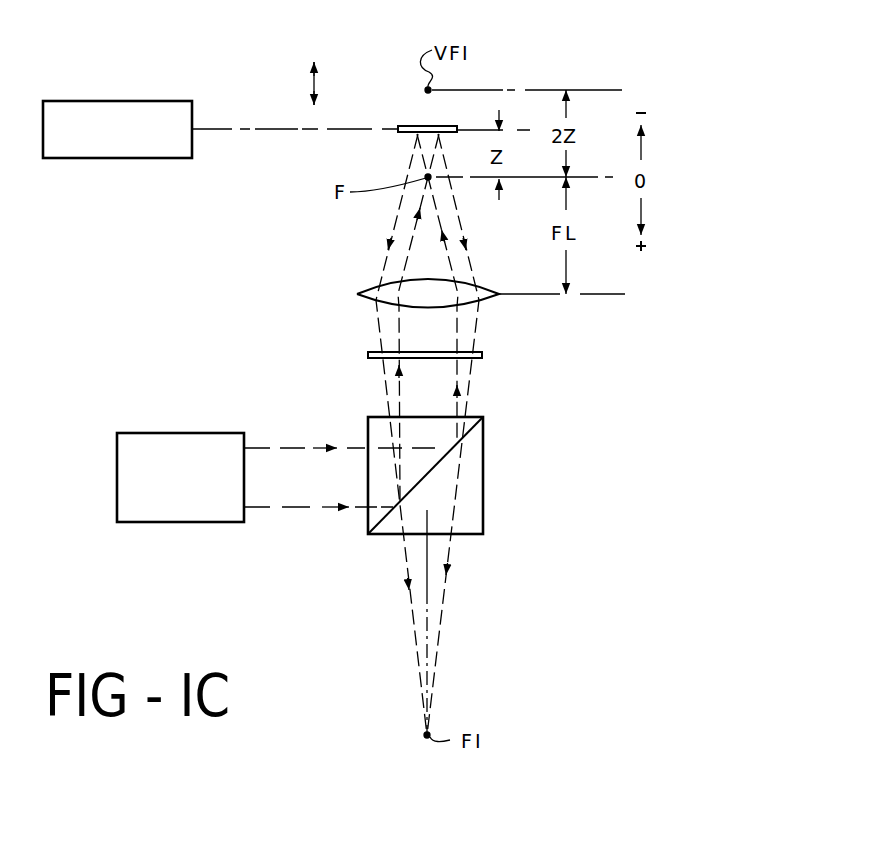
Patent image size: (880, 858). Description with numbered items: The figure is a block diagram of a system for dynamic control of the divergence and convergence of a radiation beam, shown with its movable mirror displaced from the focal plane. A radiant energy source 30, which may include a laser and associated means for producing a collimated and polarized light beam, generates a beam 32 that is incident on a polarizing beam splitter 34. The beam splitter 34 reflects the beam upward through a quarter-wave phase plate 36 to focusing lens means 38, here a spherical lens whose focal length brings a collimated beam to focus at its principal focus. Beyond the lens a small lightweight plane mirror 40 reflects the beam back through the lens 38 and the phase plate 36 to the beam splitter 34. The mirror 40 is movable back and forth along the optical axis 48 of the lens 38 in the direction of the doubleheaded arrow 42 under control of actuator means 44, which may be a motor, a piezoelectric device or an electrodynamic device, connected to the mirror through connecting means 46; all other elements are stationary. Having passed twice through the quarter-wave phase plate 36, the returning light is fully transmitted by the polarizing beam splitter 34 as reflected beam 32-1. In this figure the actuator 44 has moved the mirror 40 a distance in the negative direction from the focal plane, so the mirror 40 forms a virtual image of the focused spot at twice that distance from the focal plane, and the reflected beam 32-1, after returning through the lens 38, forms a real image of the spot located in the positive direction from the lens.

The radiant energy source 30 is at (130, 432).
The beam 32 is at (288, 446).
The reflected beam 32-1 is at (443, 604).
The polarizing beam splitter 34 is at (483, 507).
The quarter-wave phase plate 36 is at (482, 356).
The focusing lens means 38 is at (357, 293).
The plane mirror 40 is at (404, 125).
The doubleheaded arrow 42 is at (312, 82).
The actuator means 44 is at (62, 101).
The connecting means 46 is at (243, 133).
The optical axis 48 is at (426, 547).